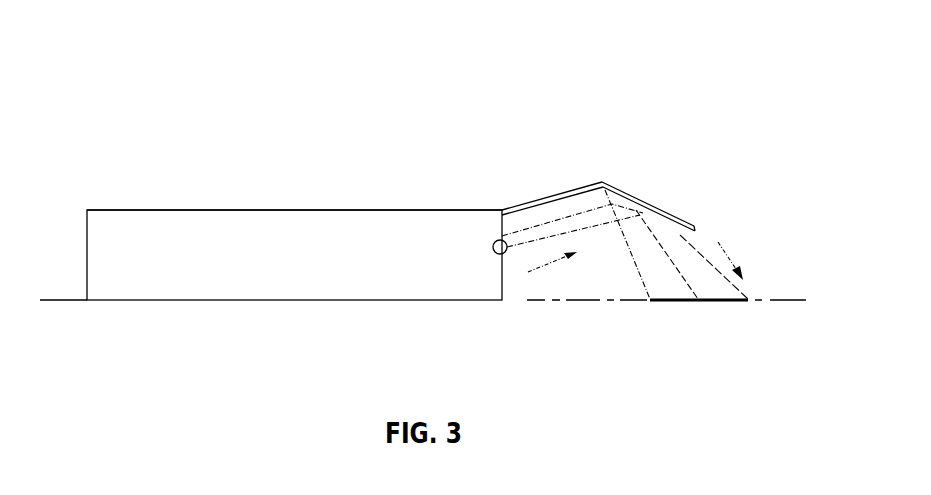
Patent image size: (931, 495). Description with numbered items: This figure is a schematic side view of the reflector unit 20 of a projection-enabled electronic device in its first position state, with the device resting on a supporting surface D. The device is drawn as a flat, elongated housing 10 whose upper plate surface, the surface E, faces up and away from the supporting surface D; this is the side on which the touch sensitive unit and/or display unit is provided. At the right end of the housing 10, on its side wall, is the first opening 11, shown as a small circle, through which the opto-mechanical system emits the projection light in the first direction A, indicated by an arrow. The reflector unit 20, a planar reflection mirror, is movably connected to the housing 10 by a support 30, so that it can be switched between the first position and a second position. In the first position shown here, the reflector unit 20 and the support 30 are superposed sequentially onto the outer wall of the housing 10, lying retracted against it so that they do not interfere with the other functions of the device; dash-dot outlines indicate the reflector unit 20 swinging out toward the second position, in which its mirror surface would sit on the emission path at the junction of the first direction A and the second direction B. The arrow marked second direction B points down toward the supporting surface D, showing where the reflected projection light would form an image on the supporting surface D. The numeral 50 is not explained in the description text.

The display device / foldable assembly 50 is at (429, 232).
The housing 10 is at (222, 300).
The first opening 11 is at (498, 257).
The reflector unit 20 is at (631, 199).
The support 30 is at (527, 203).
The surface E is at (352, 210).
The first direction A is at (552, 276).
The second direction B is at (744, 255).
The supporting surface D is at (429, 321).